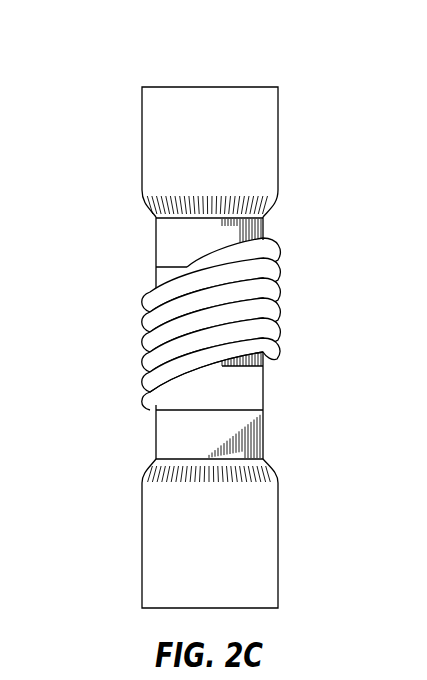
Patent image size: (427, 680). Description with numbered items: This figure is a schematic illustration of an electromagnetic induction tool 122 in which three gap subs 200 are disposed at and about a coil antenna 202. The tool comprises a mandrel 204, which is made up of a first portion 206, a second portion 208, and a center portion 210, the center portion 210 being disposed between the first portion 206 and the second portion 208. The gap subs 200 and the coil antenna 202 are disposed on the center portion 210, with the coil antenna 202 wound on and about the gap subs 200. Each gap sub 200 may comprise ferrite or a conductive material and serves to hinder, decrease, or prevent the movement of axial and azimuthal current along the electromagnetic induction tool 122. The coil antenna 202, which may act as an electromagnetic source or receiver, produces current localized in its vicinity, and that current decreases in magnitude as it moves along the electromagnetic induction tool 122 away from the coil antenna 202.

The electromagnetic induction tool 122 is at (253, 50).
The mandrel 204 is at (287, 85).
The first portion 206 is at (273, 138).
The gap sub 200 is at (157, 245).
The coil antenna 202 is at (272, 278).
The center portion 210 is at (127, 302).
The second portion 208 is at (272, 547).